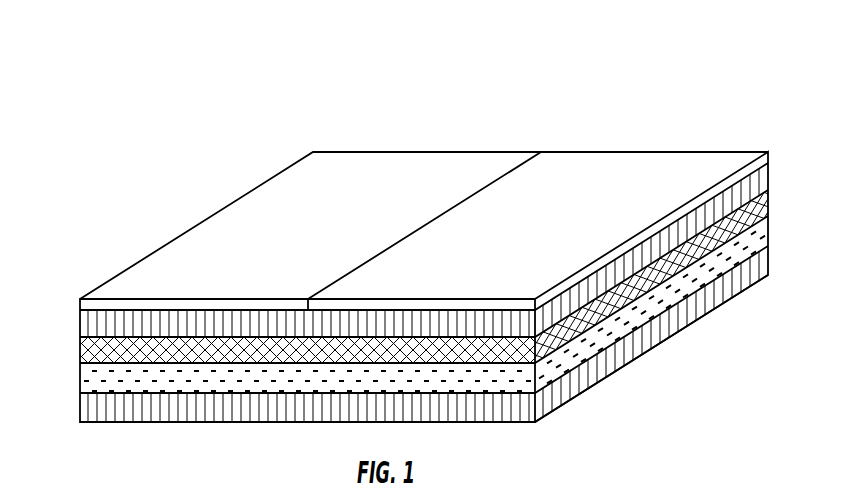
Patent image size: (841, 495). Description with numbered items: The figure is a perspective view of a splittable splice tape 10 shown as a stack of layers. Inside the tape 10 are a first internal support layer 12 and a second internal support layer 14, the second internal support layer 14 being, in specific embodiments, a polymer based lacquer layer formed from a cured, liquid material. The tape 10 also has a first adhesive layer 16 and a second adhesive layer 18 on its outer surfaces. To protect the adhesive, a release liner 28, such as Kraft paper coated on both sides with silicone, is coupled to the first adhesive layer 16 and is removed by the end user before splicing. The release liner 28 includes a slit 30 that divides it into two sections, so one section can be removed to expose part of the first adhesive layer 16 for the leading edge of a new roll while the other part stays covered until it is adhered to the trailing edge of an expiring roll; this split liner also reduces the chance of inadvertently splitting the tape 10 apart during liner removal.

The tape 10 is at (672, 110).
The first internal support layer 12 is at (82, 350).
The second internal support layer 14 is at (85, 380).
The first adhesive layer 16 is at (85, 326).
The second adhesive layer 18 is at (90, 408).
The release liner 28 is at (768, 152).
The slit 30 is at (543, 152).